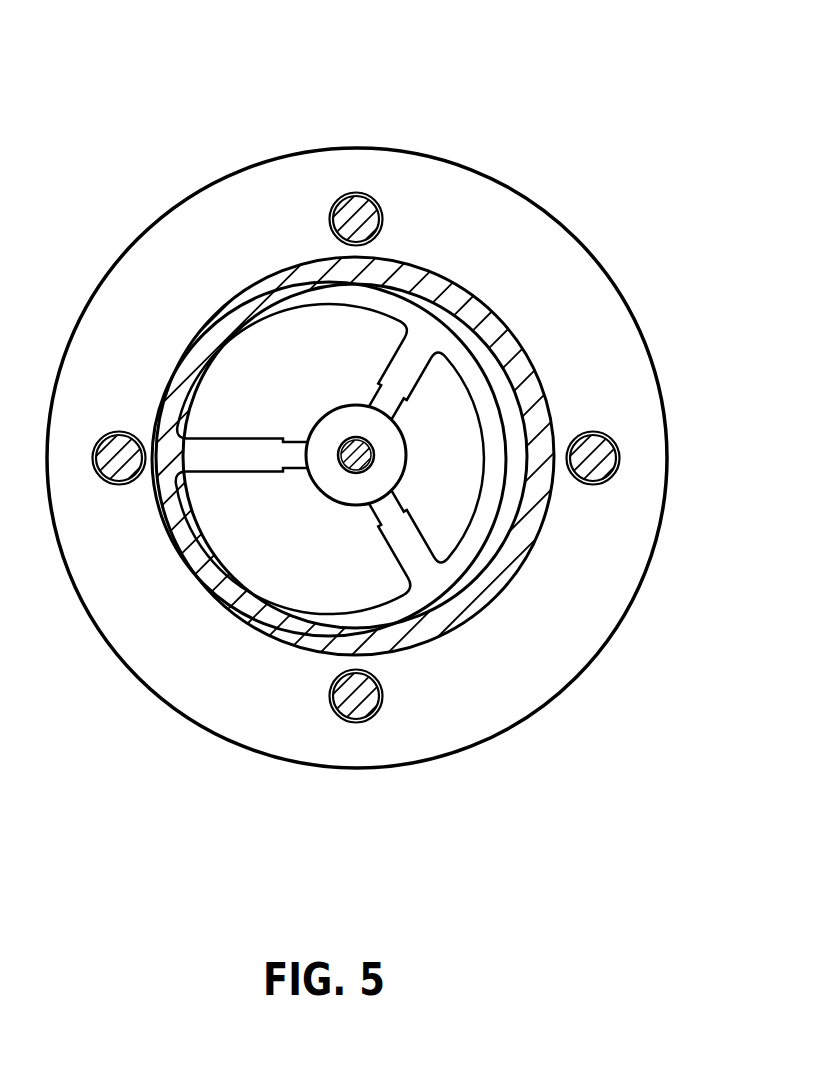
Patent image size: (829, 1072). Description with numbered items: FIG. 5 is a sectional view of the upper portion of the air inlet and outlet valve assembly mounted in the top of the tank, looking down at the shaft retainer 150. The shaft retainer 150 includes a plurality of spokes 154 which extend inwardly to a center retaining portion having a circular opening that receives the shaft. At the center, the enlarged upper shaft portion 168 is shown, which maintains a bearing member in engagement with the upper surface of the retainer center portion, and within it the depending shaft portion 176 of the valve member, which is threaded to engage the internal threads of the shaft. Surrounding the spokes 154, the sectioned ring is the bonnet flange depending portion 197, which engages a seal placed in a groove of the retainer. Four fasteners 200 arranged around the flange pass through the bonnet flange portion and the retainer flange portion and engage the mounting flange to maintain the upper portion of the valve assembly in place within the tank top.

The shaft retainer 150 is at (524, 247).
The spokes 154 is at (408, 360).
The enlarged upper shaft portion 168 is at (338, 490).
The depending shaft portion 176 is at (347, 437).
The bonnet flange depending portion 197 is at (520, 370).
The fasteners 200 is at (350, 208).